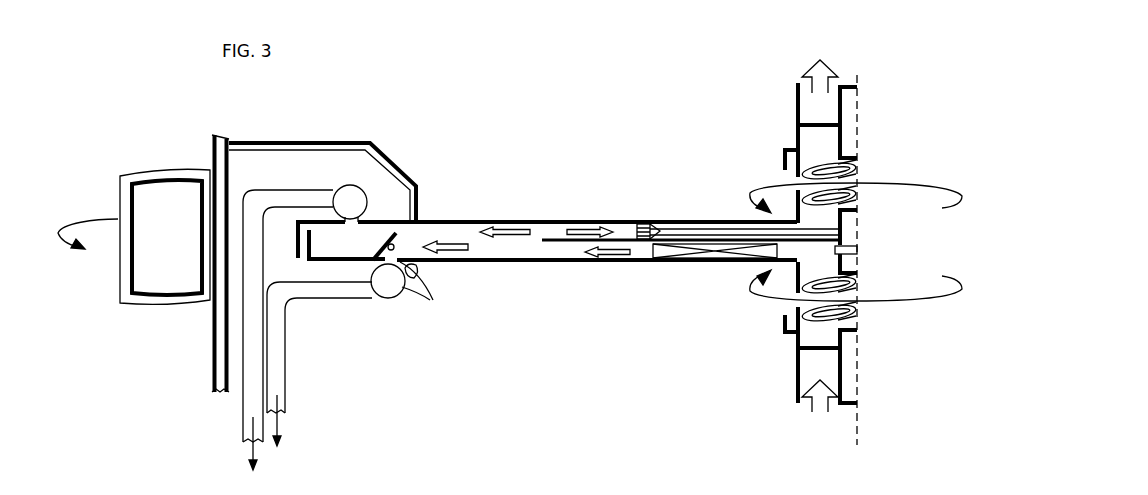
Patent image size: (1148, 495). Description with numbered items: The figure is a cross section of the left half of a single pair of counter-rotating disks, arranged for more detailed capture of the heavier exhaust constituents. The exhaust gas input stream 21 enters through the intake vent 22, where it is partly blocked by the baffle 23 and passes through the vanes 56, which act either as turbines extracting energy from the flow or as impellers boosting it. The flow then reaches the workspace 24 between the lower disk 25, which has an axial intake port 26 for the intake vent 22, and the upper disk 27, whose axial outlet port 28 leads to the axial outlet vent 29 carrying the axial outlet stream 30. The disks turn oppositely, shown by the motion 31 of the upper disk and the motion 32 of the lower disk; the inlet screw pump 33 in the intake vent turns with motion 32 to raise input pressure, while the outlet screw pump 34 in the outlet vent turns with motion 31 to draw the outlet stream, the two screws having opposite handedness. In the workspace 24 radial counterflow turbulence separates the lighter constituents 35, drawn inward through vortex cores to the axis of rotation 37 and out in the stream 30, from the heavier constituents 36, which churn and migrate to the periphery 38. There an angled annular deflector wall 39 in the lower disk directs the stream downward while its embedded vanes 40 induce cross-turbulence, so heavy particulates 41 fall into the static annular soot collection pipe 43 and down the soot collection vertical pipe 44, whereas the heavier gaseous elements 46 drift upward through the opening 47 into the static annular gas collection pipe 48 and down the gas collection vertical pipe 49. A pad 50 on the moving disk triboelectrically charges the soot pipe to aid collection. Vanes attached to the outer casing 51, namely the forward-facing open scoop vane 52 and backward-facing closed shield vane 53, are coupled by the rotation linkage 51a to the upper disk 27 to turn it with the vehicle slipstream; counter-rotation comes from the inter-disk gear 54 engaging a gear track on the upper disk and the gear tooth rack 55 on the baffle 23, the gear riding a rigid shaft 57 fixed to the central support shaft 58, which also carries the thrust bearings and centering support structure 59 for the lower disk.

The exhaust gas input stream 21 is at (812, 411).
The intake vent 22 is at (393, 268).
The baffle 23 is at (565, 245).
The workspace 24 is at (518, 252).
The lower disk 25 is at (473, 263).
The axial intake port 26 is at (832, 265).
The upper disk 27 is at (480, 218).
The axial outlet port 28 is at (832, 222).
The axial outlet vent 29 is at (819, 113).
The axial outlet stream 30 is at (822, 73).
The motion of upper disk 31 is at (775, 186).
The motion of lower disk 32 is at (767, 300).
The inlet screw pump 33 is at (796, 368).
The outlet screw pump 34 is at (830, 172).
The lighter constituents 35 is at (576, 226).
The heavier constituents 36 is at (506, 226).
The axis of rotation 37 is at (852, 90).
The periphery 38 is at (876, 366).
The angled annular deflector wall 39 is at (382, 233).
The embedded vanes in deflector wall 40 is at (396, 249).
The heavy particulates 41 is at (280, 423).
The annular soot collection pipe 43 is at (840, 318).
The soot collection vertical pipe 44 is at (450, 241).
The heavier gaseous elements 46 is at (250, 453).
The opening for peripheral gases 47 is at (350, 222).
The static annular gas collection pipe 48 is at (355, 192).
The gas collection vertical pipe 49 is at (252, 213).
The pad for triboelectric charging 50 is at (417, 272).
The outer casing 51 is at (212, 338).
The rotation linkage 51a is at (337, 145).
The open scoop vane 52 is at (175, 190).
The closed shield vane 53 is at (385, 298).
The inter-disk gear 54 is at (643, 224).
The gear tooth rack on the baffle 55 is at (658, 223).
The vane between baffle and lower disk 56 is at (658, 259).
The rigid shaft for gear 57 is at (720, 232).
The central support shaft 58 is at (858, 127).
The thrust bearings and centering support structure for lower disk 59 is at (788, 337).